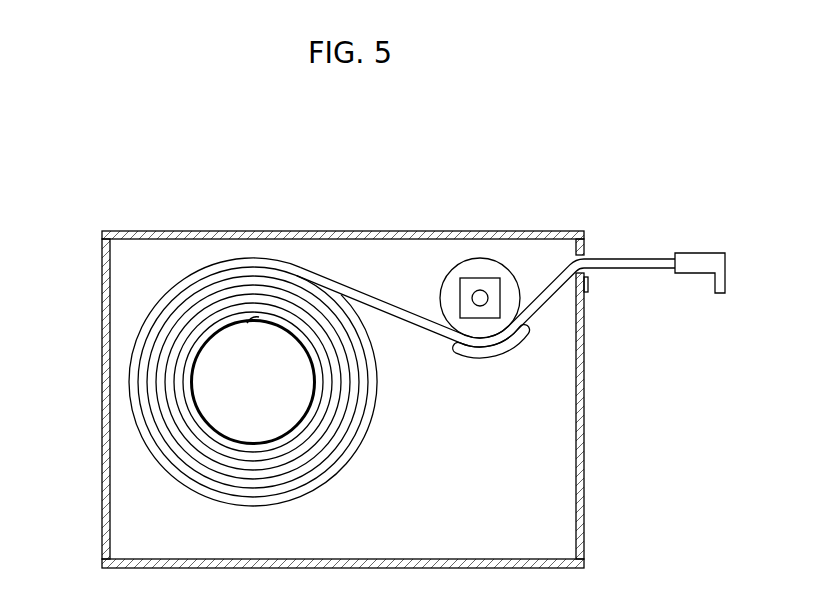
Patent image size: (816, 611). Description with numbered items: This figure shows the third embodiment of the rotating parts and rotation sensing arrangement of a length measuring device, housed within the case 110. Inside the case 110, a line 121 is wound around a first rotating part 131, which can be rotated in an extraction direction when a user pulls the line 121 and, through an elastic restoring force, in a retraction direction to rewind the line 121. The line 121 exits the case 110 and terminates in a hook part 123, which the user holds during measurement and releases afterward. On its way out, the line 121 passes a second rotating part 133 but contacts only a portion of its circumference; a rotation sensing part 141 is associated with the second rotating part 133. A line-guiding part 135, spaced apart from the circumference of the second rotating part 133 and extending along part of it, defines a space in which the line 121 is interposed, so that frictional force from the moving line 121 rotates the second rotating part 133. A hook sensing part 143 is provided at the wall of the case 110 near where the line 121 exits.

The case 110 is at (181, 231).
The line 121 is at (631, 258).
The hook part 123 is at (700, 253).
The first rotating part 131 is at (210, 383).
The second rotating part 133 is at (467, 272).
The line-guiding part 135 is at (493, 352).
The rotation sensing part 141 is at (486, 278).
The hook sensing part 143 is at (588, 284).